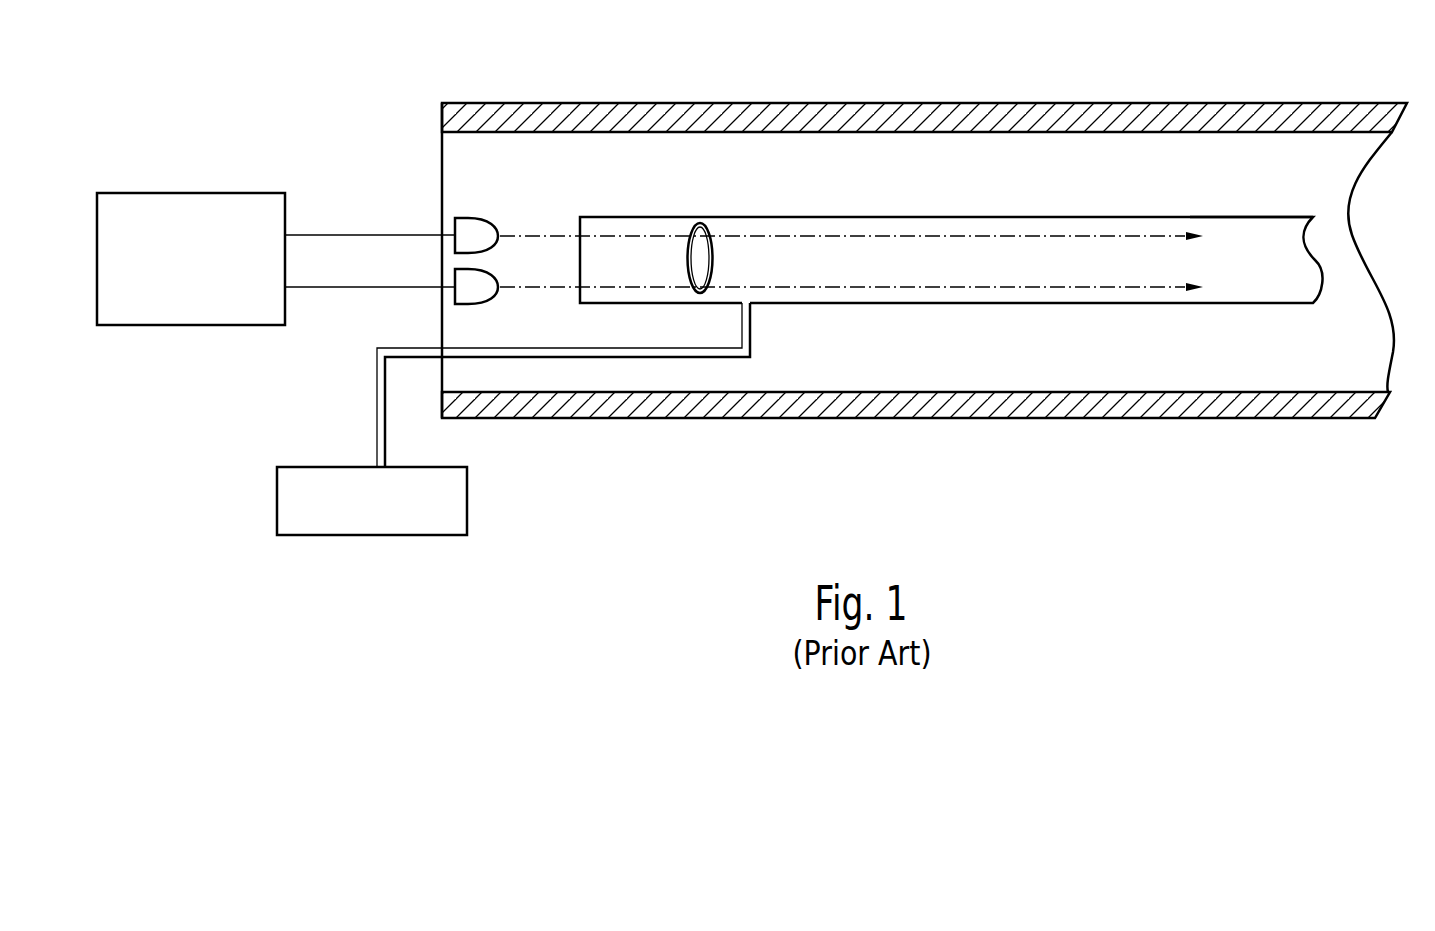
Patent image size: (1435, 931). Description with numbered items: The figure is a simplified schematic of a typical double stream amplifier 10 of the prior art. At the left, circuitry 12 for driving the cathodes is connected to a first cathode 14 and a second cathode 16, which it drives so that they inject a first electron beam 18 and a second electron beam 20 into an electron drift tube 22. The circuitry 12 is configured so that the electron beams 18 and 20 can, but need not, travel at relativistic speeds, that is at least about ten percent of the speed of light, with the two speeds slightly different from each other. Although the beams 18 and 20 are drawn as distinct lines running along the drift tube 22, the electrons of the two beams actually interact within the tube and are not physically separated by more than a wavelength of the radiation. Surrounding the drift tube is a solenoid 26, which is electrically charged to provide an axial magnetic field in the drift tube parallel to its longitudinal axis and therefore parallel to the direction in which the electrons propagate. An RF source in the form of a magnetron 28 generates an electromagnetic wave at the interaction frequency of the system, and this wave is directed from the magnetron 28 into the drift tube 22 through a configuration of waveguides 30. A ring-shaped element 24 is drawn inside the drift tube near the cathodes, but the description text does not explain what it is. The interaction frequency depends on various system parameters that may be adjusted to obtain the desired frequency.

The double stream amplifier 10 is at (523, 60).
The circuitry 12 is at (233, 193).
The first cathode 14 is at (485, 218).
The second cathode 16 is at (485, 304).
The first electron beam 18 is at (820, 236).
The second electron beam 20 is at (1003, 287).
The electron drift tube 22 is at (1195, 217).
The ring electrode 24 is at (713, 250).
The solenoid 26 is at (1007, 103).
The magnetron 28 is at (467, 485).
The waveguides 30 is at (377, 420).